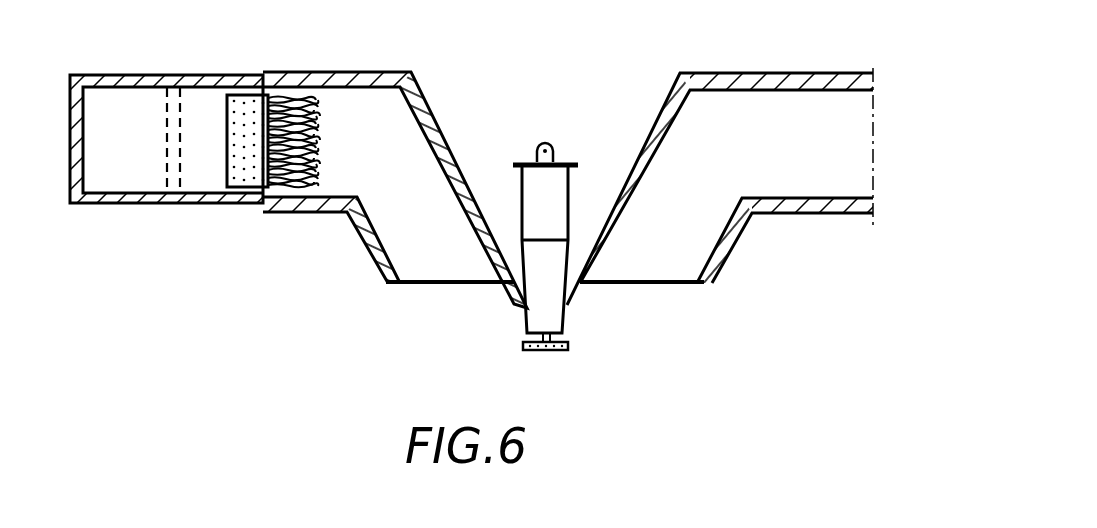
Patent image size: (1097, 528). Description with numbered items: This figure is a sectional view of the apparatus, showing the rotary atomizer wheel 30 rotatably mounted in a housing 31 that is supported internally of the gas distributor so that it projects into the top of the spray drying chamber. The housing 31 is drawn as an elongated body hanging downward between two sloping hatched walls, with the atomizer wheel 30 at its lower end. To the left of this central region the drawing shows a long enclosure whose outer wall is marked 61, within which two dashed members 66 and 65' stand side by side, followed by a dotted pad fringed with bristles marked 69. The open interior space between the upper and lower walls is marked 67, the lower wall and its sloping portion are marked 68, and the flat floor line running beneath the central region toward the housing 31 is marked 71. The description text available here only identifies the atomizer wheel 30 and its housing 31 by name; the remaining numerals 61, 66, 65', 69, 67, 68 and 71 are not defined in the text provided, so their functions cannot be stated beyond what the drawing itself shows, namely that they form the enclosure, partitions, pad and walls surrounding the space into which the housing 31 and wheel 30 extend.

The housing 61 is at (72, 112).
The partition member 66 is at (182, 120).
The partition member 65' is at (142, 166).
The absorbent pad with bristles 69 is at (243, 173).
The chamber 67 is at (380, 162).
The bottom wall 68 is at (366, 242).
The base plate 71 is at (436, 284).
The housing 31 is at (548, 298).
The rotary atomizer wheel 30 is at (569, 347).